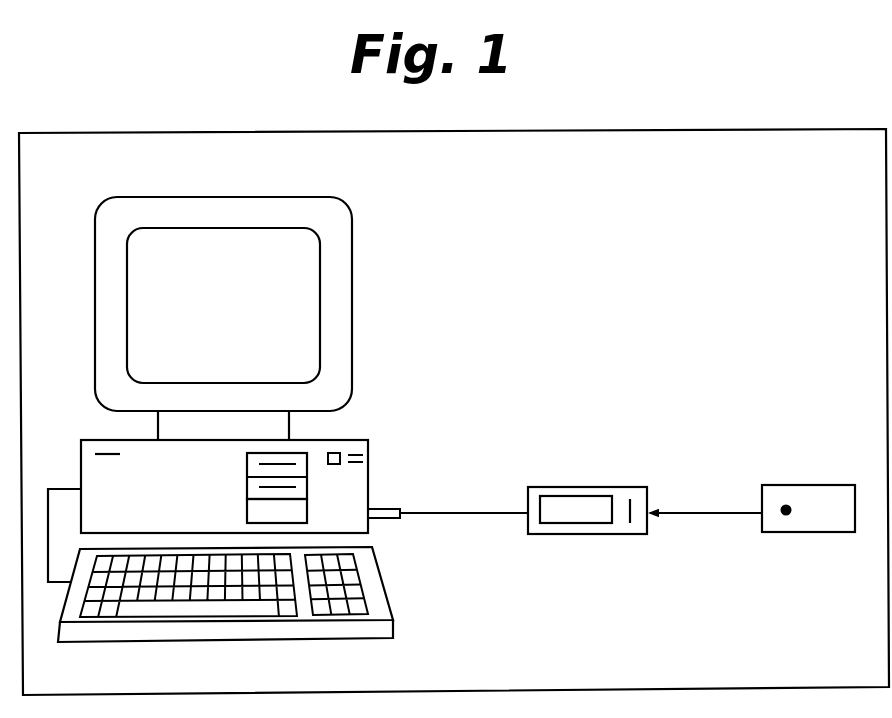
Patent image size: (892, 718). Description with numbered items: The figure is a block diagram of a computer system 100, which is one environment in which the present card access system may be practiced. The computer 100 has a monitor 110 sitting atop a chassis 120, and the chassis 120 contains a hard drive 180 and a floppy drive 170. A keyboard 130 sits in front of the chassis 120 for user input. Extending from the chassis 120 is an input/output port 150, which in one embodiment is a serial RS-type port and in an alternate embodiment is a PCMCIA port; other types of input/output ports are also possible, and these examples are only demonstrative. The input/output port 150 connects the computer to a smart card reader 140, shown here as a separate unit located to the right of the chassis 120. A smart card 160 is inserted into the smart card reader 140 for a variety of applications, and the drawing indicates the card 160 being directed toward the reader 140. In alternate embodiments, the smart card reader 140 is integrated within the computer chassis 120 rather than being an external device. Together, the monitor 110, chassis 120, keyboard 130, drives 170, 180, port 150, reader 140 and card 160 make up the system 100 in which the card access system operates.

The computer system 100 is at (524, 130).
The monitor 110 is at (354, 270).
The chassis 120 is at (370, 436).
The keyboard 130 is at (398, 607).
The smart card reader 140 is at (550, 482).
The input/output port 150 is at (403, 522).
The smart card 160 is at (837, 481).
The floppy drive 170 is at (311, 468).
The hard drive 180 is at (313, 527).